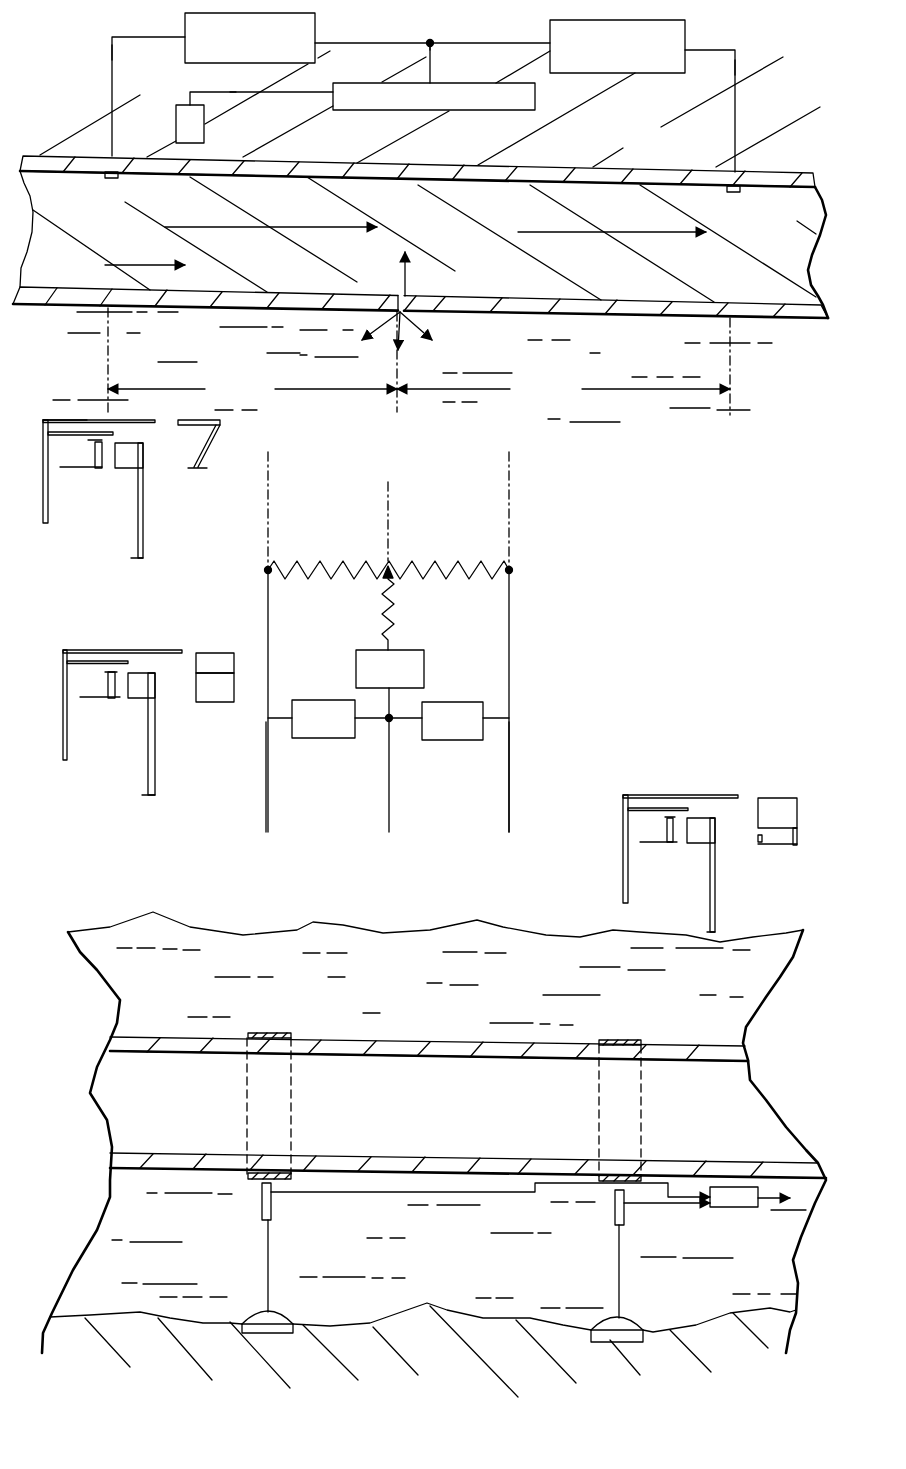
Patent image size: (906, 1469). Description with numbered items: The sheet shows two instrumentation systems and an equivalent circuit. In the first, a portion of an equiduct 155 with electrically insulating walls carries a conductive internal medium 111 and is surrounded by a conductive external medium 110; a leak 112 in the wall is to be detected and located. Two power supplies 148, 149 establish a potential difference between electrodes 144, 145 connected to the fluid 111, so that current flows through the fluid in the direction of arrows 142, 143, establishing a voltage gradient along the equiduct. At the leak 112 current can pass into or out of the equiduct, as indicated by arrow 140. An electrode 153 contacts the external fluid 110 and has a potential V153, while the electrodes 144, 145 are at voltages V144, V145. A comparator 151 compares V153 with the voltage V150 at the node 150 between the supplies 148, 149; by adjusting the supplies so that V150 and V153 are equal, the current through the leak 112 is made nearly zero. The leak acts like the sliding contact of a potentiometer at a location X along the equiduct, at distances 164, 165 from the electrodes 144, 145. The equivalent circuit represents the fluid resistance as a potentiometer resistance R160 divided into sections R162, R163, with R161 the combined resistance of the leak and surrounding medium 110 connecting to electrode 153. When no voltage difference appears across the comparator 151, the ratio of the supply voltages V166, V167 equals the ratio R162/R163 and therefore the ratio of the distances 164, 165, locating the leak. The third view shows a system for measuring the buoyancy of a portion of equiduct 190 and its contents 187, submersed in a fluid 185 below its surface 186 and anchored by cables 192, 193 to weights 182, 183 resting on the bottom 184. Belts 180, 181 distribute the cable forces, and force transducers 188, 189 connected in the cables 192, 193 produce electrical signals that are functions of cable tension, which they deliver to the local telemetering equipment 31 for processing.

In FIG. 7, the external medium 110 is at (657, 149).
In FIG. 7, the internal medium 111 is at (522, 219).
In FIG. 7, the leak 112 is at (410, 298).
In FIG. 7, the arrow 140 is at (410, 318).
In FIG. 7, the arrow 142 is at (246, 227).
In FIG. 7, the arrow 143 is at (596, 232).
In FIG. 7, the electrode 144 is at (114, 180).
In FIG. 7, the electrode 145 is at (735, 194).
In FIG. 7, the power supply 148 is at (186, 22).
In FIG. 8, the power supply 148 is at (348, 735).
In FIG. 7, the power supply 149 is at (680, 33).
In FIG. 8, the power supply 149 is at (478, 737).
In FIG. 7, the node 150 is at (430, 43).
In FIG. 7, the comparator 151 is at (500, 112).
In FIG. 8, the comparator 151 is at (410, 683).
In FIG. 7, the electrode 153 is at (176, 114).
In FIG. 7, the equiduct 155 is at (222, 312).
In FIG. 7, the distance 164 is at (252, 360).
In FIG. 7, the distance 165 is at (563, 366).
In FIG. 7, the voltage at electrode 144 V144 is at (112, 38).
In FIG. 7, the voltage at electrode 145 V145 is at (745, 84).
In FIG. 7, the voltage at node 150 V150 is at (432, 43).
In FIG. 7, the potential of electrode 153 V153 is at (217, 93).
In FIG. 7, the location along the equiduct X is at (145, 251).
In FIG. 8, the potentiometer resistance R160 is at (268, 463).
In FIG. 8, the combined resistance R161 is at (383, 614).
In FIG. 8, the section of potentiometer resistance R162 is at (388, 508).
In FIG. 8, the section of potentiometer resistance R163 is at (509, 508).
In FIG. 8, the voltage produced by power supply 148 V166 is at (388, 813).
In FIG. 8, the voltage produced by power supply 149 V167 is at (509, 813).
In FIG. 9, the local telemetering equipment 31 is at (728, 1208).
In FIG. 9, the belt 180 is at (272, 1034).
In FIG. 9, the belt 181 is at (615, 1042).
In FIG. 9, the weight 182 is at (283, 1318).
In FIG. 9, the weight 183 is at (638, 1320).
In FIG. 9, the bottom 184 is at (472, 1354).
In FIG. 9, the fluid 185 is at (482, 1283).
In FIG. 9, the surface 186 is at (483, 918).
In FIG. 9, the contents 187 is at (472, 1109).
In FIG. 9, the force transducer 188 is at (272, 1205).
In FIG. 9, the force transducer 189 is at (625, 1213).
In FIG. 9, the equiduct 190 is at (405, 1040).
In FIG. 9, the cable 192 is at (267, 1277).
In FIG. 9, the cable 193 is at (617, 1284).